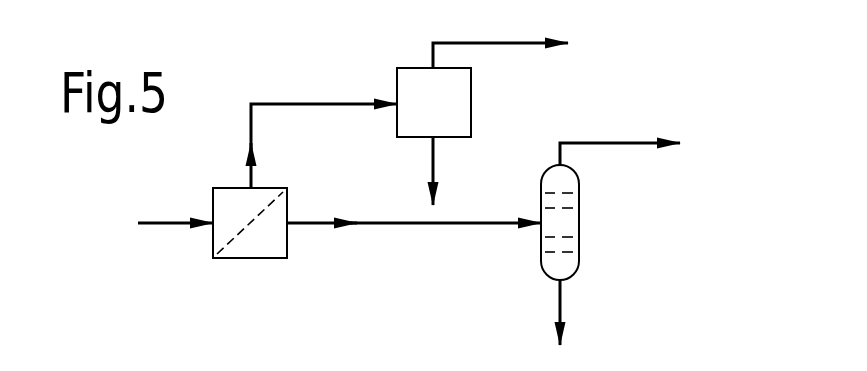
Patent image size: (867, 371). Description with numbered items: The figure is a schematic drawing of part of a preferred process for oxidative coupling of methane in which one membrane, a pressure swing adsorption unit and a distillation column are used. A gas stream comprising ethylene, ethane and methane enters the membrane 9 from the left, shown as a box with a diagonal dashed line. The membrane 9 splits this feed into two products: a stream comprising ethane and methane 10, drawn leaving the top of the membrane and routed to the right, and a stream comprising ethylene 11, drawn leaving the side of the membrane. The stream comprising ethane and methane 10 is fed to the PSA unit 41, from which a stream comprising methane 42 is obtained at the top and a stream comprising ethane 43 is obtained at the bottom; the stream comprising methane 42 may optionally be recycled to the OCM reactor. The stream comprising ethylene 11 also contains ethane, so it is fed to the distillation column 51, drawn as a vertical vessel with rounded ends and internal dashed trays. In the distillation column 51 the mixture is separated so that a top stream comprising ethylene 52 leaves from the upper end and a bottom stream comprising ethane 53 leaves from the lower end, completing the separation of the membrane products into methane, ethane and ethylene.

The membrane 9 is at (250, 206).
The stream comprising ethane and methane 10 is at (323, 127).
The stream comprising ethylene 11 is at (414, 204).
The PSA unit 41 is at (434, 102).
The stream comprising methane 42 is at (500, 37).
The stream comprising ethane 43 is at (450, 171).
The distillation column 51 is at (574, 222).
The top stream comprising ethylene 52 is at (620, 136).
The bottom stream comprising ethane 53 is at (578, 312).